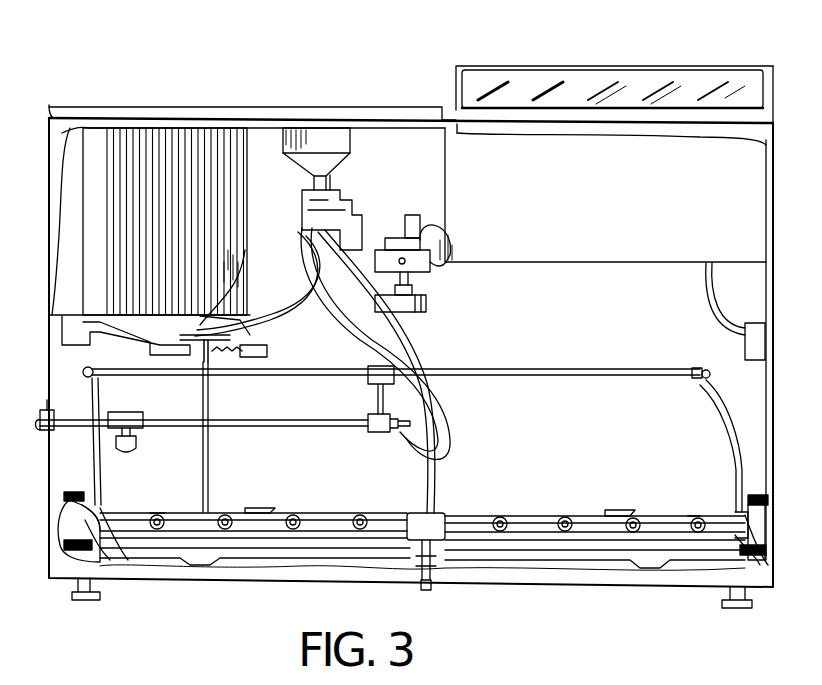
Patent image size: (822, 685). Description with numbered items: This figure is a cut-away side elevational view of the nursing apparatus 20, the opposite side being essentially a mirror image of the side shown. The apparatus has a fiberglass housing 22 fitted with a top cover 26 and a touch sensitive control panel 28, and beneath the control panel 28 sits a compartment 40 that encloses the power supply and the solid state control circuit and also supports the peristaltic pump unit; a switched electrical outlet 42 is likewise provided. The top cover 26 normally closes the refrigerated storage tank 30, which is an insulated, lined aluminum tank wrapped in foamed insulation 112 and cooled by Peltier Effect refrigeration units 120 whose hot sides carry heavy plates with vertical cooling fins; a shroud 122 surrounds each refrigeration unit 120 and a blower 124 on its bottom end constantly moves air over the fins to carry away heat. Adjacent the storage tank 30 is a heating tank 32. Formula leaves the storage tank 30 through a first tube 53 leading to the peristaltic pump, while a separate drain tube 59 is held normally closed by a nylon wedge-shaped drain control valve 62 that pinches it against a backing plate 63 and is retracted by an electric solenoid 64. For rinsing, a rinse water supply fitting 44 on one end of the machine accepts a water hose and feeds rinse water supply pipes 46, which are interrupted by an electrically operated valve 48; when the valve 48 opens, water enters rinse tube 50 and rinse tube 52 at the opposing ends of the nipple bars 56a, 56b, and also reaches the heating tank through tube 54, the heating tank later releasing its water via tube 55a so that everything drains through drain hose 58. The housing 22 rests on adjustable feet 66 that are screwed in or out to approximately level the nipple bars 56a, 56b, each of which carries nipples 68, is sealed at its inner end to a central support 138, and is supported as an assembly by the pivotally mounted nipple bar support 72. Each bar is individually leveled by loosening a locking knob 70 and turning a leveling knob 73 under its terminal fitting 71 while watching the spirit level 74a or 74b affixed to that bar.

The nursing apparatus 20 is at (60, 88).
The fiberglass housing 22 is at (773, 125).
The top cover 26 is at (229, 108).
The touch sensitive control panel 28 is at (472, 75).
The refrigerated storage tank 30 is at (262, 165).
The heating tank 32 is at (345, 145).
The compartment 40 is at (620, 204).
The switched electrical outlet 42 is at (770, 318).
The rinse water supply fitting 44 is at (50, 420).
The rinse water supply pipes 46 is at (580, 372).
The electrically operated valve 48 is at (134, 446).
The rinse tube 50 is at (96, 480).
The rinse tube 52 is at (722, 385).
The first tube 53 is at (306, 262).
The tube 54 is at (420, 346).
The tube 55a is at (430, 424).
The nipple bar 56a is at (345, 512).
The nipple bar 56b is at (518, 516).
The drain hose 58 is at (466, 566).
The drain tube 59 is at (210, 465).
The drain control valve 62 is at (268, 360).
The backing plate 63 is at (150, 392).
The electric solenoid 64 is at (268, 345).
The adjustable feet 66 is at (72, 590).
The nipple 68 is at (156, 513).
The locking knob 70 is at (118, 512).
The terminal fitting 71 is at (100, 520).
The nipple bar support 72 is at (290, 562).
The leveling knob 73 is at (82, 540).
The spirit level 74a is at (266, 512).
The spirit level 74b is at (612, 513).
The foamed insulation 112 is at (345, 224).
The refrigeration unit 120 is at (146, 128).
The shroud 122 is at (232, 292).
The blower 124 is at (86, 345).
The central support 138 is at (418, 515).